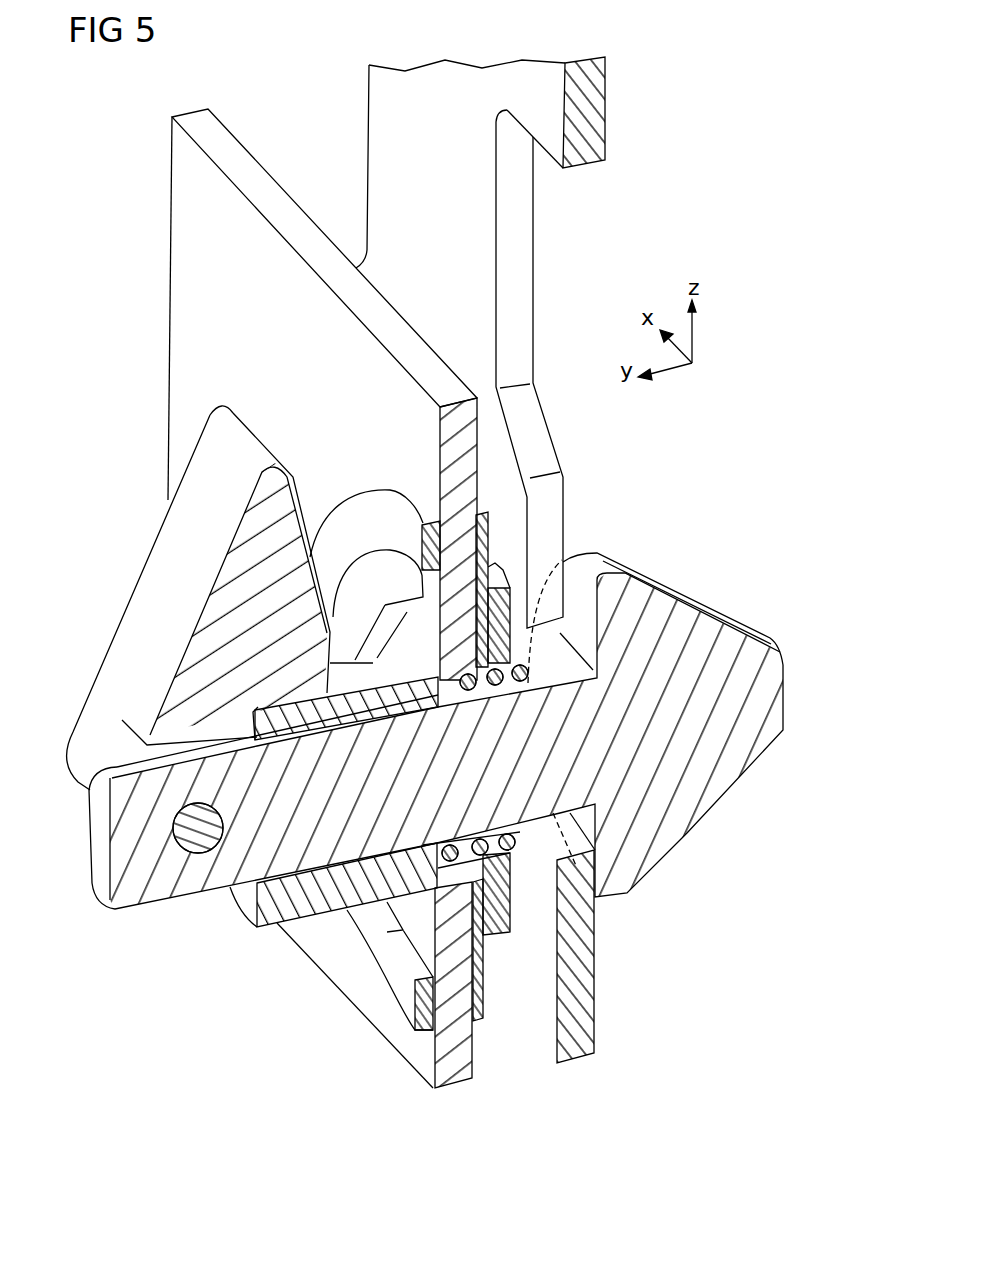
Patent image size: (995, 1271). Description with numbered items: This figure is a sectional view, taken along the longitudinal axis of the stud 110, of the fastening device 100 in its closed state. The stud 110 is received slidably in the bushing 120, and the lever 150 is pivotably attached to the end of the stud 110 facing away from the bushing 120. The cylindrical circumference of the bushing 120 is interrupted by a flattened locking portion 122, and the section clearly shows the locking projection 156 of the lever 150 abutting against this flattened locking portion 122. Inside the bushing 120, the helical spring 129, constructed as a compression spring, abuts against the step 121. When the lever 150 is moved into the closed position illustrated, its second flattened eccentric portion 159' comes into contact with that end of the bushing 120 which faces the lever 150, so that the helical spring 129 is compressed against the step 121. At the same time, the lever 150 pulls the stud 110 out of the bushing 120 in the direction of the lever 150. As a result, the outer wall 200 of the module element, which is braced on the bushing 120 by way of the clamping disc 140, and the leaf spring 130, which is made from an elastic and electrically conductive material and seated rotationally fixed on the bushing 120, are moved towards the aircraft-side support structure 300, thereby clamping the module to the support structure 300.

The fastening device 100 is at (118, 506).
The stud 110 is at (577, 750).
The bushing 120 is at (275, 910).
The step 121 is at (422, 848).
The flattened locking portion 122 is at (299, 705).
The helical spring 129 is at (521, 815).
The leaf spring 130 is at (483, 533).
The clamping disc 140 is at (373, 497).
The lever 150 is at (148, 600).
The locking projection 156 is at (273, 703).
The second flattened eccentric portion 159' is at (189, 715).
The outer wall 200 is at (418, 358).
The support structure 300 is at (592, 130).